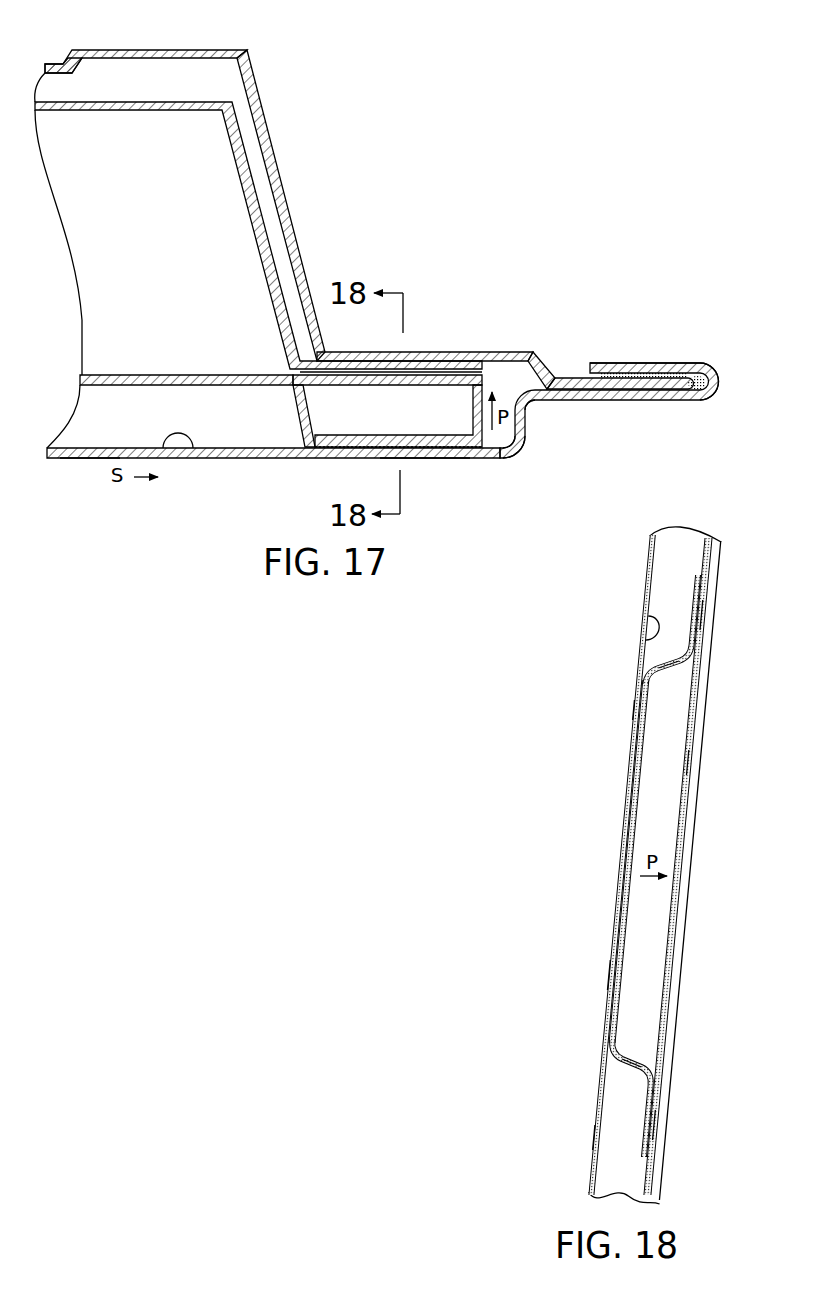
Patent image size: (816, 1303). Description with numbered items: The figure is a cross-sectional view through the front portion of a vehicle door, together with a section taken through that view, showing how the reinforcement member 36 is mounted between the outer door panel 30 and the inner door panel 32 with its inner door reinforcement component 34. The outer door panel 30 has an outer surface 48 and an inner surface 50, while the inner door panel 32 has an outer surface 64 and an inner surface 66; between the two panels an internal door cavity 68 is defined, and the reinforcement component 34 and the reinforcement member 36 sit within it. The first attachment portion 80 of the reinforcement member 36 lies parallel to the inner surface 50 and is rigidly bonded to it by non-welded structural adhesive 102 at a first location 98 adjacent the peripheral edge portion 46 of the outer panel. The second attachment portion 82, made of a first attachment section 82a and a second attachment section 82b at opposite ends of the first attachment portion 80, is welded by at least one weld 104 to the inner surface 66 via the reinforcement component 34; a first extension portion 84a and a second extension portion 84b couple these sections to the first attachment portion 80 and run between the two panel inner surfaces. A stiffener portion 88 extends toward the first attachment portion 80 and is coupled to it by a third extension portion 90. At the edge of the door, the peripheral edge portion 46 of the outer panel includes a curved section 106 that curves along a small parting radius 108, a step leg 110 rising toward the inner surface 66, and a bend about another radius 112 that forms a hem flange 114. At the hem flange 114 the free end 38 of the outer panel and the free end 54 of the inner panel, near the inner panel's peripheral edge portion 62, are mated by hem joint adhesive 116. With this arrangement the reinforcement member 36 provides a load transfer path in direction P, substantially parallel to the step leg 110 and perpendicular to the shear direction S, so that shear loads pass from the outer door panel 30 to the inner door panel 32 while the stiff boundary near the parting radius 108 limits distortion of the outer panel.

In FIG. 17, the outer door panel 30 is at (88, 462).
In FIG. 18, the outer door panel 30 is at (592, 1138).
In FIG. 17, the inner door panel 32 is at (277, 147).
In FIG. 18, the inner door panel 32 is at (684, 855).
In FIG. 17, the inner door reinforcement component 34 is at (88, 114).
In FIG. 18, the inner door reinforcement component 34 is at (688, 820).
In FIG. 17, the reinforcement member 36 is at (181, 322).
In FIG. 18, the reinforcement member 36 is at (646, 782).
In FIG. 17, the vertically extending free end 38 is at (713, 396).
In FIG. 17, the peripheral edge portion 46 is at (613, 438).
In FIG. 17, the outer surface 48 is at (254, 458).
In FIG. 18, the outer surface 48 is at (638, 609).
In FIG. 17, the inner surface 50 is at (191, 450).
In FIG. 18, the inner surface 50 is at (648, 639).
In FIG. 17, the vertically extending free end 54 is at (702, 400).
In FIG. 17, the peripheral edge portion 62 is at (556, 354).
In FIG. 17, the outer surface 64 is at (112, 50).
In FIG. 17, the inner surface 66 is at (142, 60).
In FIG. 18, the inner surface 66 is at (690, 763).
In FIG. 17, the internal door cavity 68 is at (118, 254).
In FIG. 18, the internal door cavity 68 is at (681, 552).
In FIG. 17, the first attachment portion 80 is at (345, 438).
In FIG. 18, the first attachment portion 80 is at (641, 675).
In FIG. 17, the second attachment portion 82 is at (362, 372).
In FIG. 18, the first attachment section 82a is at (695, 590).
In FIG. 18, the second attachment section 82b is at (645, 1108).
In FIG. 18, the first extension portion 84a is at (669, 664).
In FIG. 18, the second extension portion 84b is at (637, 1062).
In FIG. 17, the stiffener portion 88 is at (110, 388).
In FIG. 17, the third extension portion 90 is at (300, 408).
In FIG. 18, the first location 98 is at (632, 710).
In FIG. 17, the non-welded structural adhesive 102 is at (428, 452).
In FIG. 18, the non-welded structural adhesive 102 is at (612, 975).
In FIG. 17, the weld 104 is at (443, 372).
In FIG. 18, the weld 104 is at (706, 615).
In FIG. 17, the curved section 106 is at (529, 454).
In FIG. 17, the parting radius 108 is at (491, 458).
In FIG. 17, the step leg 110 is at (526, 432).
In FIG. 17, the radius 112 is at (537, 408).
In FIG. 17, the hem flange 114 is at (708, 375).
In FIG. 17, the hem joint adhesive 116 is at (607, 364).